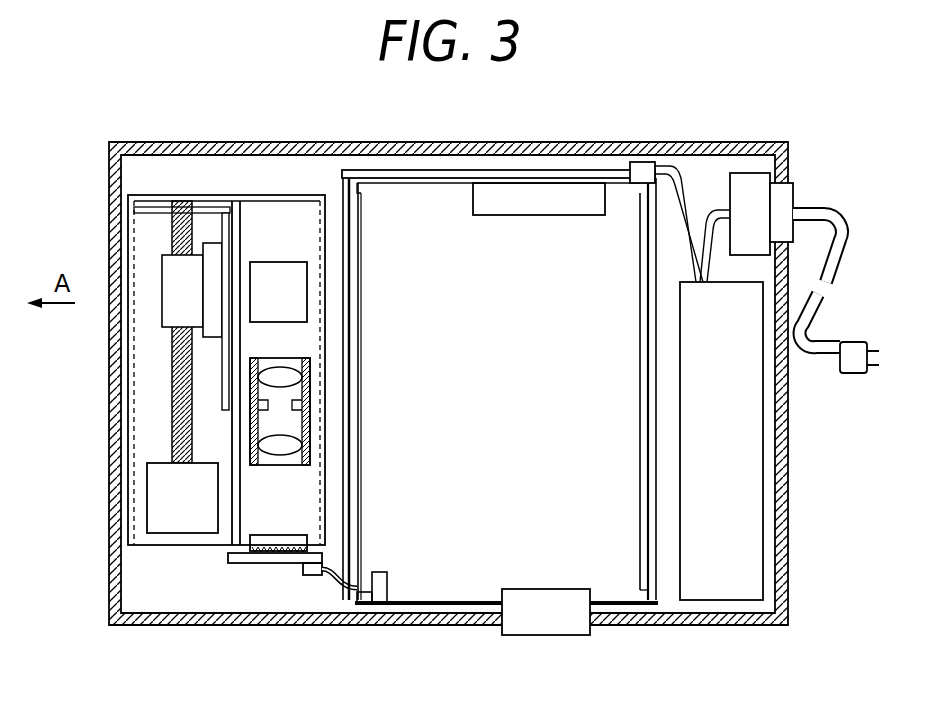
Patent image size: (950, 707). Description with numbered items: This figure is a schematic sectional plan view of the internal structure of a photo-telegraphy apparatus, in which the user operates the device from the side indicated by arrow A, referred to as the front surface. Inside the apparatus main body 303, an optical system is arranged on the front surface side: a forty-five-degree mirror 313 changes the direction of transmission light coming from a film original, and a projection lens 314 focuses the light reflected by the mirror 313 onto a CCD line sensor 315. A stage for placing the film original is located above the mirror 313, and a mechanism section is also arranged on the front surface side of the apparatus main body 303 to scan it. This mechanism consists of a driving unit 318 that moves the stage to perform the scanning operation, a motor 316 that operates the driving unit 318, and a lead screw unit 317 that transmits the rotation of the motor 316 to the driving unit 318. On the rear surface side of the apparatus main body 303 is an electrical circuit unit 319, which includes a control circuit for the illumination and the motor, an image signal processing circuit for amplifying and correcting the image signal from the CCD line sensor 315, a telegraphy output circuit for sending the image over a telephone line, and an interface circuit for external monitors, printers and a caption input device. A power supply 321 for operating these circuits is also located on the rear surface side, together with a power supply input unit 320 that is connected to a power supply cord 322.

The apparatus main body 303 is at (226, 142).
The 45° mirror 313 is at (283, 262).
The projection lens 314 is at (310, 395).
The CCD line sensor 315 is at (258, 555).
The motor 316 is at (147, 498).
The lead screw unit 317 is at (172, 348).
The driving unit 318 is at (178, 393).
The electrical circuit unit 319 is at (445, 212).
The power supply input unit 320 is at (752, 190).
The power supply 321 is at (725, 592).
The power supply cord 322 is at (820, 214).